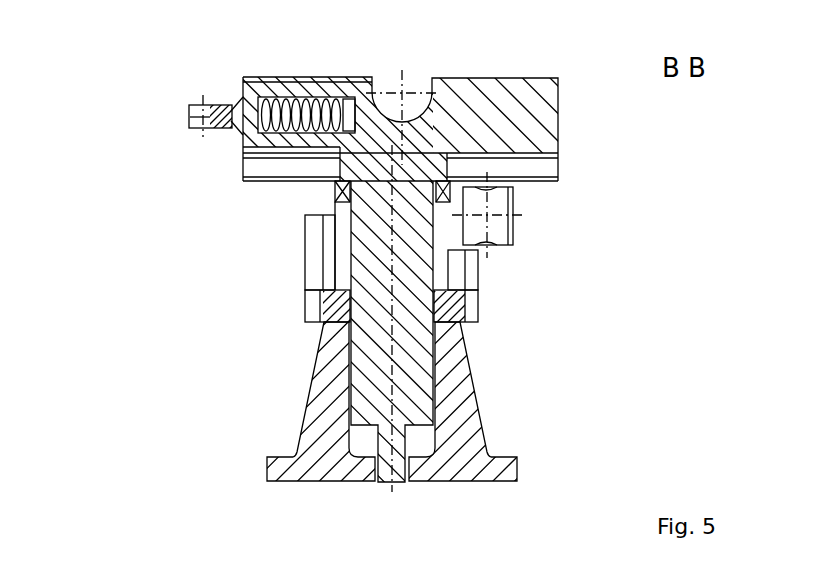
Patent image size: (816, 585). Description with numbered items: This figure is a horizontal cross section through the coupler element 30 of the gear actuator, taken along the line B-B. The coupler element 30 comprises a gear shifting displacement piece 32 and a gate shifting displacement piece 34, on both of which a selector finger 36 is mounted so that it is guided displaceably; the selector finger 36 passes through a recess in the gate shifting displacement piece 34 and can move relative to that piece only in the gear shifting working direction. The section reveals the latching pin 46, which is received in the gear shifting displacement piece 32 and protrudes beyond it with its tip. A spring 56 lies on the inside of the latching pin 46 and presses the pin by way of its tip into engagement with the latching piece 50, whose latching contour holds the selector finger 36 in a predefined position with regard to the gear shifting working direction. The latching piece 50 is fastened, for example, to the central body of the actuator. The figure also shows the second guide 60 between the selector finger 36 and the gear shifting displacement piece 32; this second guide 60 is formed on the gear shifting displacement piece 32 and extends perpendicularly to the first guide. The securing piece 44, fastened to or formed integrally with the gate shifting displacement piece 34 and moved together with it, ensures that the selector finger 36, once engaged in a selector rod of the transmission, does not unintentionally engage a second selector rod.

The coupler element 30 is at (149, 63).
The gear shifting displacement piece 32 is at (520, 97).
The gate shifting displacement piece 34 is at (317, 255).
The selector finger 36 is at (398, 483).
The securing piece 44 is at (473, 438).
The latching pin 46 is at (273, 90).
The latching piece 50 is at (190, 127).
The spring 56 is at (337, 90).
The second guide 60 is at (548, 170).